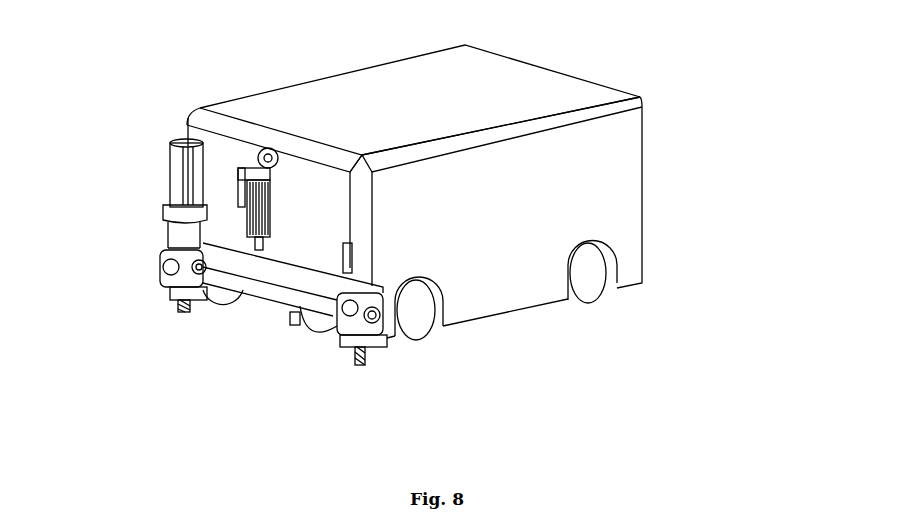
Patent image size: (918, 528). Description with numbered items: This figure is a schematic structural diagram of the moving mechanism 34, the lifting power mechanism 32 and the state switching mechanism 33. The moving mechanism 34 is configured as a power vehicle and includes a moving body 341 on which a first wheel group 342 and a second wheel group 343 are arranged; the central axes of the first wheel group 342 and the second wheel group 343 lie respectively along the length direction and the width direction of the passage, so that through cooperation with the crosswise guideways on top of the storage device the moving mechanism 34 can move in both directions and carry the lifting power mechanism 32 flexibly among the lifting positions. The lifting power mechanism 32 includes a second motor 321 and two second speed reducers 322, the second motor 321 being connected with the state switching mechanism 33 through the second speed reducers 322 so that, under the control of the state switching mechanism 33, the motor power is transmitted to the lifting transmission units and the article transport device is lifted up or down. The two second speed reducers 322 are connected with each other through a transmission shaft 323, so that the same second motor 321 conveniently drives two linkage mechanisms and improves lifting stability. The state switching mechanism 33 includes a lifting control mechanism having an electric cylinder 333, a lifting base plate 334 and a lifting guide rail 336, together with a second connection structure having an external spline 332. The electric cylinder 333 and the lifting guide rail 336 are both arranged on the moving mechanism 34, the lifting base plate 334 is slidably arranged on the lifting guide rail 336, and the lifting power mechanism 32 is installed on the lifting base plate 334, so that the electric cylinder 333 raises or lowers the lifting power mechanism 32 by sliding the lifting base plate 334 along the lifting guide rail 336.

The moving mechanism 34 is at (620, 158).
The moving body 341 is at (423, 80).
The first wheel group 342 is at (607, 287).
The second wheel group 343 is at (318, 330).
The lifting power mechanism 32 is at (302, 276).
The second motor 321 is at (170, 187).
The second speed reducer 322 is at (160, 268).
The transmission shaft 323 is at (243, 297).
The state switching mechanism 33 is at (370, 352).
The external spline 332 is at (185, 300).
The electric cylinder 333 is at (238, 190).
The lifting base plate 334 is at (168, 293).
The lifting guide rail 336 is at (345, 243).